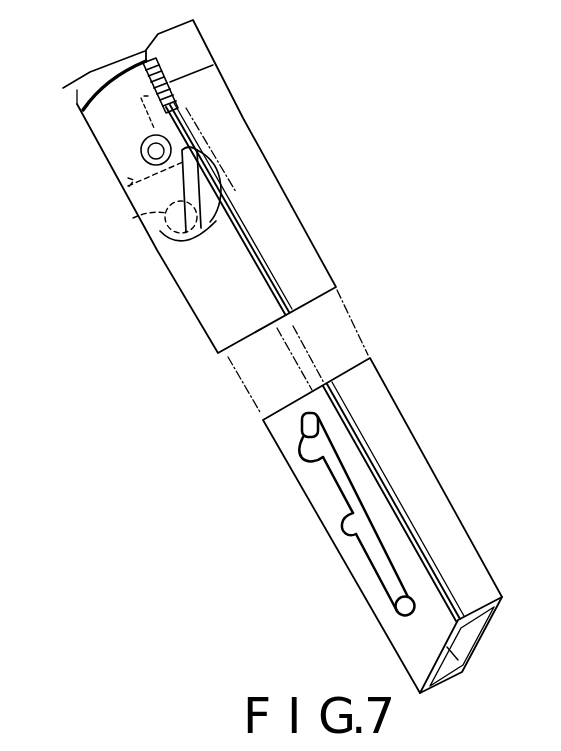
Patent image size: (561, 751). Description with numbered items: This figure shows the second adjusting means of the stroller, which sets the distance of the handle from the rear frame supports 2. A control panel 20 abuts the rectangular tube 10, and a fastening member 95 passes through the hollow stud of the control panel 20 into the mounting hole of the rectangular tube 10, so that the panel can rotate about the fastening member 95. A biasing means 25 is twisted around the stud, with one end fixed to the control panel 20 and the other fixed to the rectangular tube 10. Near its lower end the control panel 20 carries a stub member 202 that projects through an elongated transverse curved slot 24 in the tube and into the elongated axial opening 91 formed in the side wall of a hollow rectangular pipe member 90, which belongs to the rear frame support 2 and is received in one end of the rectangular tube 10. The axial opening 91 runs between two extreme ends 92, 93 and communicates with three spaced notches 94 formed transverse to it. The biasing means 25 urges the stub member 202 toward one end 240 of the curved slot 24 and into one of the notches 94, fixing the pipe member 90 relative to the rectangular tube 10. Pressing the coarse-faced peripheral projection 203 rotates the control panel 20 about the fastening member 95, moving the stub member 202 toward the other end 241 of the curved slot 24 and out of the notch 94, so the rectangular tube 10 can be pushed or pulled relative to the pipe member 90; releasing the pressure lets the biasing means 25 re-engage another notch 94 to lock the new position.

The rear frame support 2 is at (463, 413).
The rectangular tube 10 is at (318, 267).
The control panel 20 is at (108, 145).
The elongated transverse curved slot 24 is at (215, 216).
The biasing means 25 is at (124, 185).
The hollow rectangular pipe member 90 is at (443, 523).
The elongated axial opening 91 is at (353, 487).
The extreme end of axial opening 92 is at (319, 422).
The extreme end of axial opening 93 is at (449, 592).
The notches 94 is at (303, 453).
The fastening member 95 is at (200, 143).
The stub member 202 is at (153, 237).
The peripheral projection 203 is at (212, 64).
The end of curved slot 240 is at (150, 226).
The end of curved slot 241 is at (222, 200).